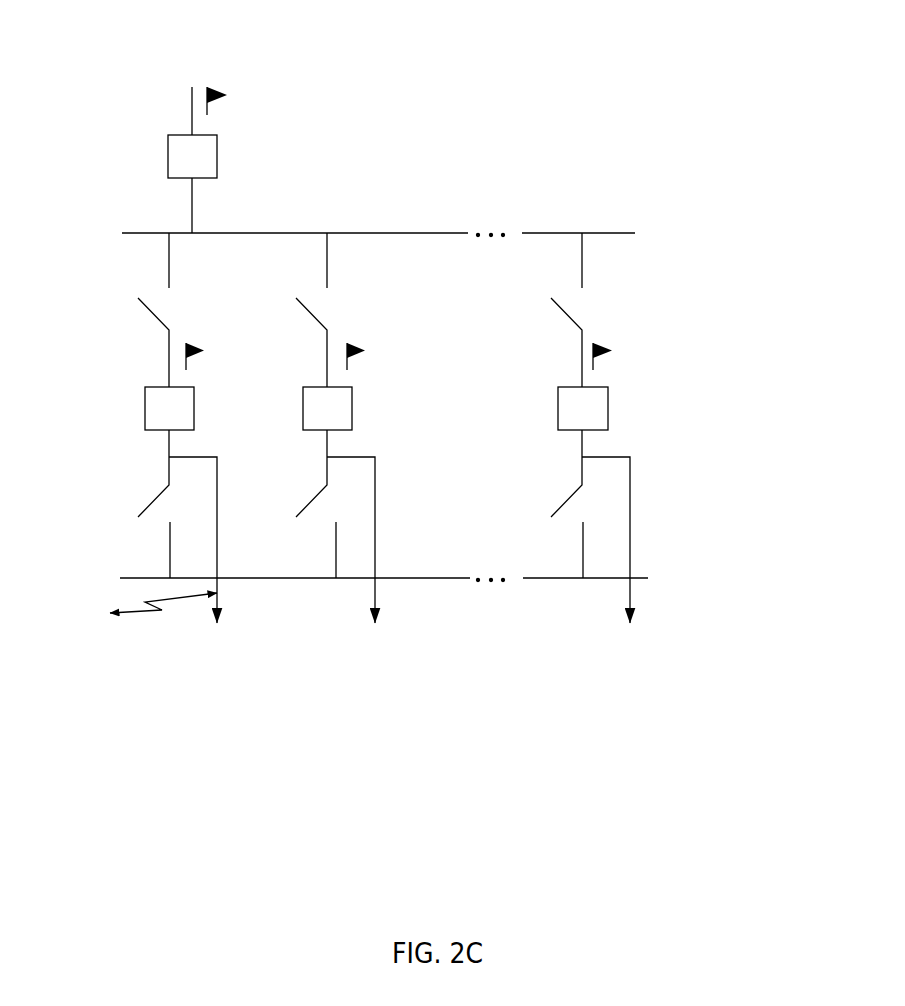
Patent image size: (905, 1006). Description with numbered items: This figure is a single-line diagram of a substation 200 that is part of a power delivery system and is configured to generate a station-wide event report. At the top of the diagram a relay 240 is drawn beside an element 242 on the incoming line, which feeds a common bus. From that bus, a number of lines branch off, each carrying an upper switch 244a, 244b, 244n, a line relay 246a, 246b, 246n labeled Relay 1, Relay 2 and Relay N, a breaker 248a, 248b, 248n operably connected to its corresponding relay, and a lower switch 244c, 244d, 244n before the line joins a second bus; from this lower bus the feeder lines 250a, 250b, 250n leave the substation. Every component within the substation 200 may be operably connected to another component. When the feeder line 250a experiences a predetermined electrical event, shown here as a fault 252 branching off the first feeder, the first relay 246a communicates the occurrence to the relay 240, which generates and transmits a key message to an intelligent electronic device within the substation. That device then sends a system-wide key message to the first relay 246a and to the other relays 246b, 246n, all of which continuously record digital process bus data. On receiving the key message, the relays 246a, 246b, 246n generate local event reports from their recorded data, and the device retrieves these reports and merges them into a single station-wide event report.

The substation 200 is at (493, 67).
The relay 240 is at (318, 97).
The circuit breaker 242 is at (227, 160).
The switch 244a is at (142, 290).
The switch 244b is at (307, 290).
The switch 244c is at (127, 517).
The switch 244d is at (293, 517).
The switch 244n is at (563, 288).
The first relay 246a is at (167, 350).
The relay 246b is at (470, 345).
The relay 246n is at (725, 347).
The breaker 248a is at (200, 405).
The breaker 248b is at (360, 412).
The breaker 248n is at (612, 412).
The feeder line 250a is at (208, 655).
The feeder line 250b is at (372, 655).
The feeder line 250n is at (623, 655).
The fault 252 is at (100, 622).